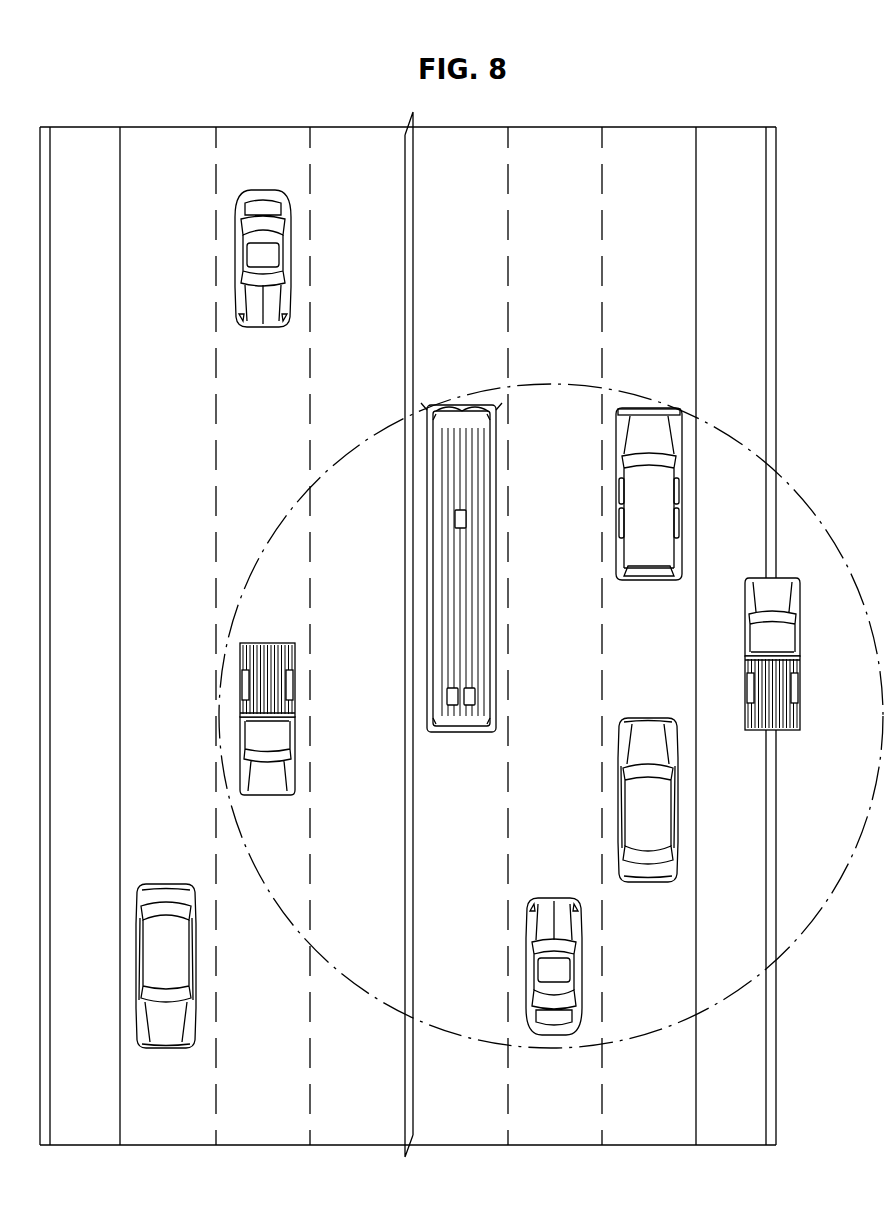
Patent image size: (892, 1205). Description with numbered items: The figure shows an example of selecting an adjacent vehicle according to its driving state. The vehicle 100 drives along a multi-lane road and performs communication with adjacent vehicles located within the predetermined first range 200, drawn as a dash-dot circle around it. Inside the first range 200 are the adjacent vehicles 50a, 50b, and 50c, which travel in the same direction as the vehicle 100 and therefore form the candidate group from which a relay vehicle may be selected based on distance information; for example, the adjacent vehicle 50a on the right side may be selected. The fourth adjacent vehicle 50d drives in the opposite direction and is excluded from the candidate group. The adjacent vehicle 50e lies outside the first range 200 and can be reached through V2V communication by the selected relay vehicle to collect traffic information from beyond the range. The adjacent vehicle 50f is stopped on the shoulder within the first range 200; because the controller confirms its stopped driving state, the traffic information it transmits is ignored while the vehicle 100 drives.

The adjacent vehicle 50a is at (683, 507).
The adjacent vehicle 50b is at (497, 540).
The adjacent vehicle 50c is at (583, 961).
The fourth adjacent vehicle 50d is at (294, 701).
The adjacent vehicle 50e is at (581, 177).
The adjacent vehicle 50f is at (801, 682).
The vehicle 100 is at (679, 797).
The first range 200 is at (568, 383).